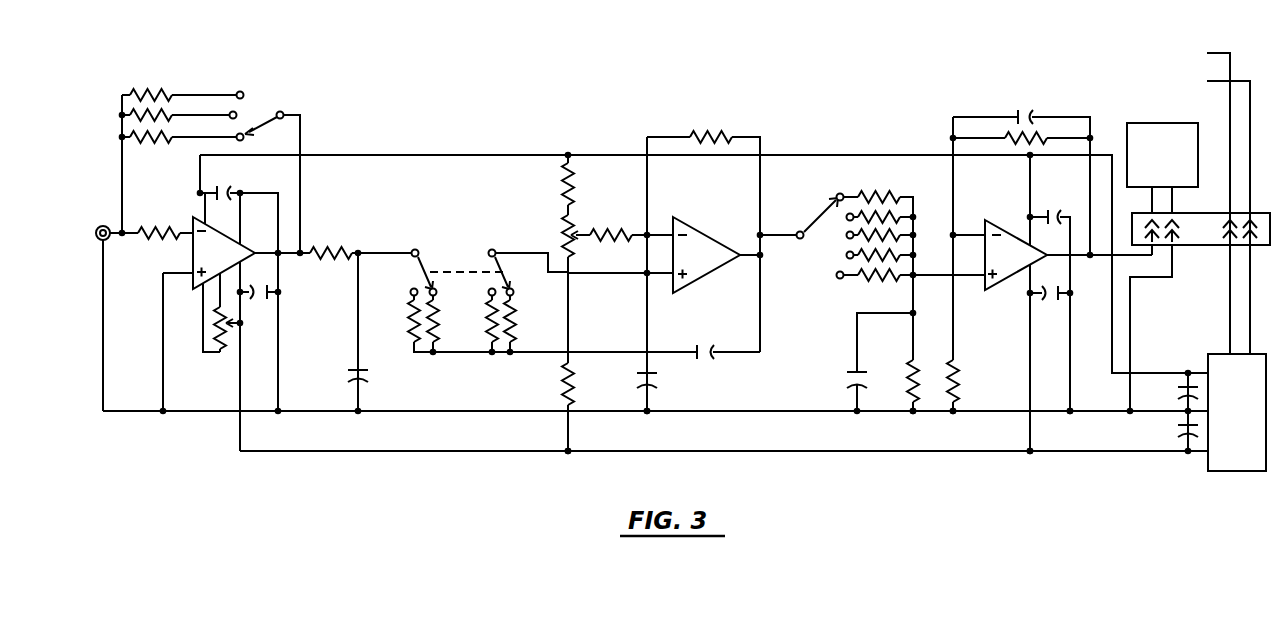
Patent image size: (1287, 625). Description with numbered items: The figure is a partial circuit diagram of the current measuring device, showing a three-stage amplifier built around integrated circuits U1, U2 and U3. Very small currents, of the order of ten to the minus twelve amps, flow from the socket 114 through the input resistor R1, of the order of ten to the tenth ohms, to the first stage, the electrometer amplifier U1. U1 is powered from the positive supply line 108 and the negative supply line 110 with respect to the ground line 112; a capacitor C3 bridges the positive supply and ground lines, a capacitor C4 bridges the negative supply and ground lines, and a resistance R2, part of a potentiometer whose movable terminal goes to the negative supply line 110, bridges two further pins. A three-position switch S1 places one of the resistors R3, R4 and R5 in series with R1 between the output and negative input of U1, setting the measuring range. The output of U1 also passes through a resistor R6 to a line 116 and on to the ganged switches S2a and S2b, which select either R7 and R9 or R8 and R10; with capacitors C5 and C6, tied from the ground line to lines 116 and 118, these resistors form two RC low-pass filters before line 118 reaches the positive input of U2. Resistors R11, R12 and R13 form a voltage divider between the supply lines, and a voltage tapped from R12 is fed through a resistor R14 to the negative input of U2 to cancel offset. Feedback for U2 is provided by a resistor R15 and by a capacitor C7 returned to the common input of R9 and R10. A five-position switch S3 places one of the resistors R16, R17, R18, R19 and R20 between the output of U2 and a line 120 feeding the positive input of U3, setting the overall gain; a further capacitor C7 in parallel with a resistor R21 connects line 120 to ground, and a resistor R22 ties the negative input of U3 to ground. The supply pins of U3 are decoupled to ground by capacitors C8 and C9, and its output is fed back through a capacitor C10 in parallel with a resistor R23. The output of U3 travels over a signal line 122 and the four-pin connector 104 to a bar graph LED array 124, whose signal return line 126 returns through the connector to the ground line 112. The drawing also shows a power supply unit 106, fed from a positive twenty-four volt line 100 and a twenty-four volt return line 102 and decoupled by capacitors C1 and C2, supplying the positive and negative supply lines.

The +24V supply line 100 is at (1229, 335).
The 24V return line 102 is at (1251, 335).
The 4-pin connector 104 is at (1205, 246).
The DC-DC converter power supply 106 is at (1232, 472).
The positive supply line 108 is at (828, 155).
The negative supply line 110 is at (955, 453).
The ground line 112 is at (812, 413).
The socket 114 is at (111, 224).
The line 116 is at (378, 253).
The line 118 is at (600, 272).
The line 120 is at (972, 280).
The signal line 122 is at (1133, 258).
The bar graph LED array 124 is at (1160, 122).
The signal return line 126 is at (1132, 306).
The resistor R1 is at (148, 228).
The resistance R2 is at (202, 324).
The resistor R3 is at (166, 95).
The resistor R4 is at (173, 119).
The resistor R5 is at (155, 140).
The resistor R6 is at (325, 251).
The resistor R7 is at (404, 316).
The resistor R8 is at (437, 316).
The resistor R9 is at (485, 340).
The resistor R10 is at (513, 316).
The resistor R11 is at (562, 181).
The resistor R12 is at (560, 232).
The resistor R13 is at (560, 387).
The resistor R14 is at (618, 227).
The resistor R15 is at (702, 127).
The resistor R16 is at (873, 196).
The resistor R17 is at (908, 211).
The resistor R18 is at (908, 231).
The resistor R19 is at (908, 257).
The resistor R20 is at (872, 285).
The resistor R21 is at (910, 390).
The resistor R22 is at (958, 383).
The resistor R23 is at (1020, 147).
The capacitor C1 is at (1174, 396).
The capacitor C2 is at (1172, 433).
The capacitor C3 is at (230, 189).
The capacitor C4 is at (258, 299).
The capacitor C5 is at (346, 373).
The capacitor C6 is at (658, 386).
The capacitor C7 is at (698, 343).
The capacitor C8 is at (1050, 211).
The capacitor C9 is at (1043, 304).
The capacitor C10 is at (1018, 112).
The three-position switch S1 is at (262, 113).
The two-position selector switch S2a is at (414, 268).
The switch S2b is at (500, 268).
The five-position selector switch S3 is at (833, 226).
The integrated circuit U1 is at (228, 263).
The integrated circuit U2 is at (713, 265).
The integrated circuit amplifier U3 is at (1023, 265).